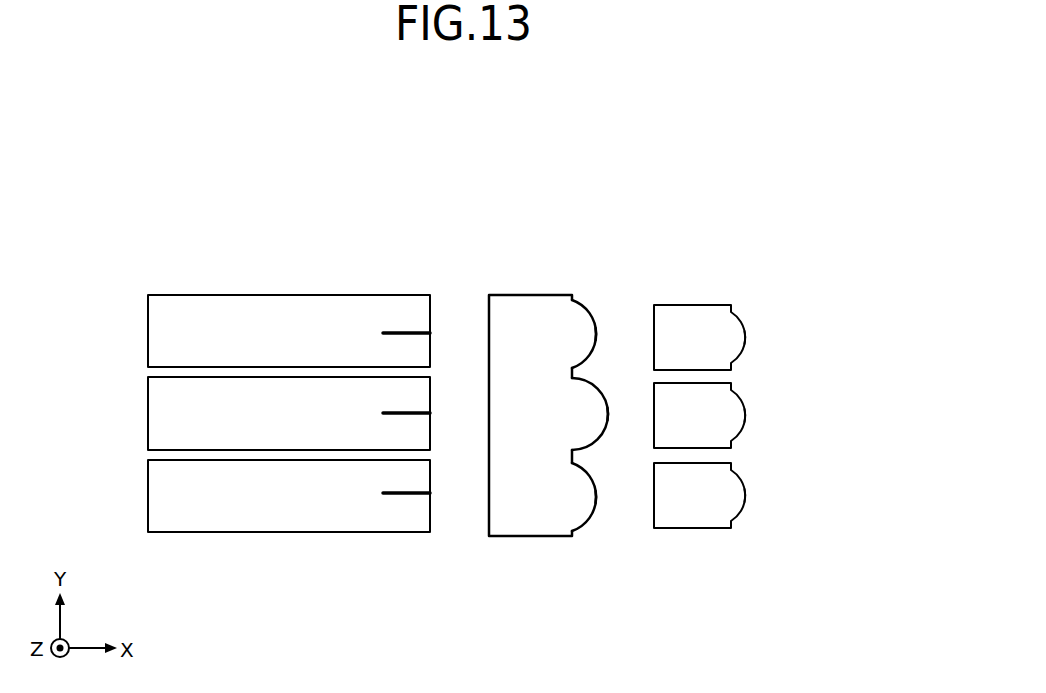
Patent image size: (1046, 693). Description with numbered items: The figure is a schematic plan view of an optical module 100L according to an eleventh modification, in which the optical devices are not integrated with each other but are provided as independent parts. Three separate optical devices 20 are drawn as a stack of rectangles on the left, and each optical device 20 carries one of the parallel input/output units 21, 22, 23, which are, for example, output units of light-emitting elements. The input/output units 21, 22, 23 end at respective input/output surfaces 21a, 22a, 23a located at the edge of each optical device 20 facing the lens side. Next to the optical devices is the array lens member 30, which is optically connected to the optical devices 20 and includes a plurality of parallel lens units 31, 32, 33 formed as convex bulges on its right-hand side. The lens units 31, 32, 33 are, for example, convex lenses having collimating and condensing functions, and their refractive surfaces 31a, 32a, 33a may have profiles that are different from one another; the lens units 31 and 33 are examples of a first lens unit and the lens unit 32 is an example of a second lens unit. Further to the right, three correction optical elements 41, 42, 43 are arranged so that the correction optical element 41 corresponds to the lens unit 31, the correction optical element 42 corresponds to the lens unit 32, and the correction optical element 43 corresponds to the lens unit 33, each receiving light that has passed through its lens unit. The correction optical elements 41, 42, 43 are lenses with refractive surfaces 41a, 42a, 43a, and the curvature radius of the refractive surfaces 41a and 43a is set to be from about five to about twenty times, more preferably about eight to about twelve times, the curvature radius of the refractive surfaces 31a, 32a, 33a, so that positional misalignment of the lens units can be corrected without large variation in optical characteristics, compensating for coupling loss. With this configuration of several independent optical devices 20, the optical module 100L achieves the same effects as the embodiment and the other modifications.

The optical module 100L is at (738, 152).
The optical device 20 is at (144, 329).
The input/output unit 21 is at (404, 332).
The input/output surface of input/output unit 21a is at (432, 333).
The input/output unit 22 is at (397, 413).
The input/output surface of input/output unit 22a is at (433, 414).
The input/output unit 23 is at (397, 493).
The input/output surface of input/output unit 23a is at (432, 494).
The array lens member 30 is at (503, 284).
The lens unit 31 is at (583, 332).
The refractive surface 31a is at (596, 337).
The lens unit 32 is at (589, 415).
The refractive surface 32a is at (607, 430).
The lens unit 33 is at (580, 492).
The refractive surface 33a is at (594, 498).
The correction optical element 41 is at (745, 319).
The refractive surface 41a is at (747, 336).
The correction optical element 42 is at (745, 398).
The refractive surface 42a is at (748, 413).
The correction optical element 43 is at (748, 508).
The refractive surface 43a is at (747, 494).